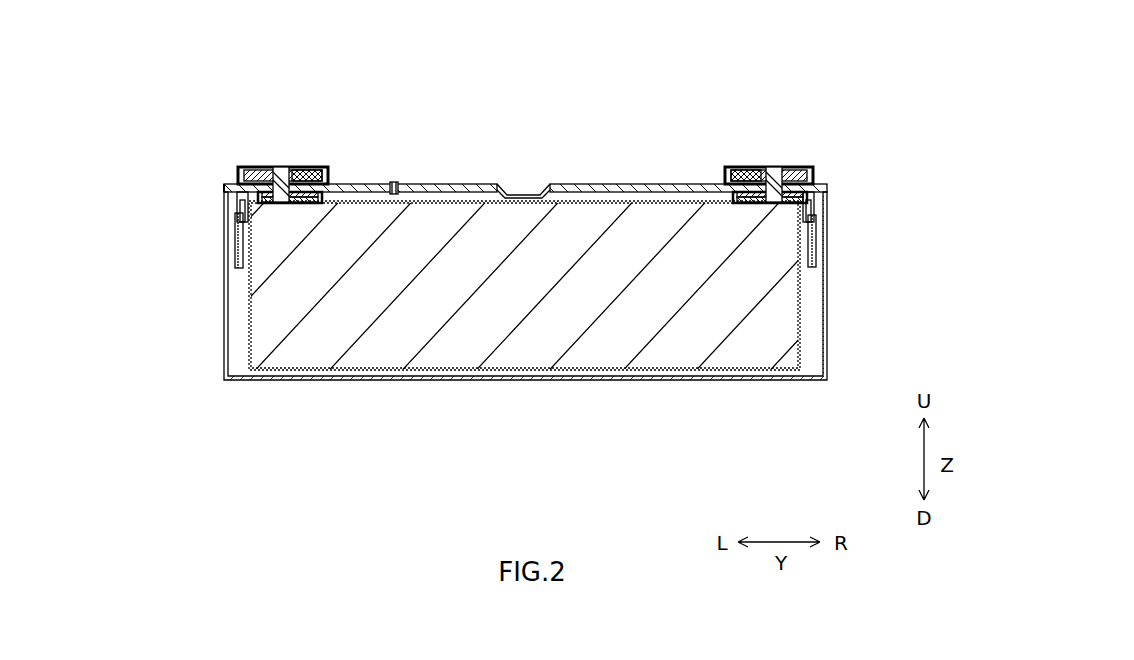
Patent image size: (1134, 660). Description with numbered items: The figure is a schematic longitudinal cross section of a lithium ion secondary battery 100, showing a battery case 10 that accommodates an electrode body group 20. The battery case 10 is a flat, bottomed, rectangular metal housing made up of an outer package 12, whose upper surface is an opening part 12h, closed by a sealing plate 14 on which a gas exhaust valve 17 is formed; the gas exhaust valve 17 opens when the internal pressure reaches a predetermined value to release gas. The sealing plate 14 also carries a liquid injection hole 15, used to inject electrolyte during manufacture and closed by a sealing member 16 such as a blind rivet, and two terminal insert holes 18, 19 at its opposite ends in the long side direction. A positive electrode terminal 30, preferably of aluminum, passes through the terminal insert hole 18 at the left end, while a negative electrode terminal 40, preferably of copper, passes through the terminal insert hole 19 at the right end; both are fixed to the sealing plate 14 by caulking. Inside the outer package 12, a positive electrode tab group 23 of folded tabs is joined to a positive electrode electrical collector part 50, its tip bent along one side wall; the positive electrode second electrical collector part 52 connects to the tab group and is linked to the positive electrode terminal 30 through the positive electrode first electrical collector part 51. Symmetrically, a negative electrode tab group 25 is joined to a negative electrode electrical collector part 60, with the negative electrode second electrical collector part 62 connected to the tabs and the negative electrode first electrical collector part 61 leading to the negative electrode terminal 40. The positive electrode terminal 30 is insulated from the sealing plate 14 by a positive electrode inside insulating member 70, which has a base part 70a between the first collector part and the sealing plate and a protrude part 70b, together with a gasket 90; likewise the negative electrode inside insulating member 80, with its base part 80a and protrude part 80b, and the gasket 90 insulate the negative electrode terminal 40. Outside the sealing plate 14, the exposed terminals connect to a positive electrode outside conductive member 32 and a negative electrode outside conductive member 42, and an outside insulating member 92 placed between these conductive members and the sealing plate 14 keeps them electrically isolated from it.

The battery 100 is at (817, 88).
The battery case 10 is at (855, 180).
The outer package 12 is at (828, 352).
The opening part 12h is at (236, 181).
The sealing plate 14 is at (588, 184).
The liquid injection hole 15 is at (404, 122).
The sealing member 16 is at (396, 182).
The gas exhaust valve 17 is at (528, 188).
The terminal insert hole 18 is at (274, 170).
The terminal insert hole 19 is at (770, 168).
The electrode body group 20 is at (505, 356).
The positive electrode tab group 23 is at (246, 284).
The negative electrode tab group 25 is at (806, 268).
The positive electrode terminal 30 is at (280, 164).
The positive electrode outside conductive member 32 is at (314, 168).
The negative electrode terminal 40 is at (778, 164).
The negative electrode outside conductive member 42 is at (730, 170).
The positive electrode electrical collector part 50 is at (158, 200).
The positive electrode first electrical collector part 51 is at (236, 202).
The positive electrode second electrical collector part 52 is at (235, 238).
The negative electrode electrical collector part 60 is at (894, 200).
The negative electrode first electrical collector part 61 is at (814, 202).
The negative electrode second electrical collector part 62 is at (816, 237).
The positive electrode inside insulating member 70 is at (414, 400).
The base part 70a is at (288, 201).
The protrude part 70b is at (303, 201).
The negative electrode inside insulating member 80 is at (636, 400).
The base part 80a is at (777, 201).
The protrude part 80b is at (765, 201).
The gasket 90 is at (250, 168).
The outside insulating member 92 is at (238, 172).